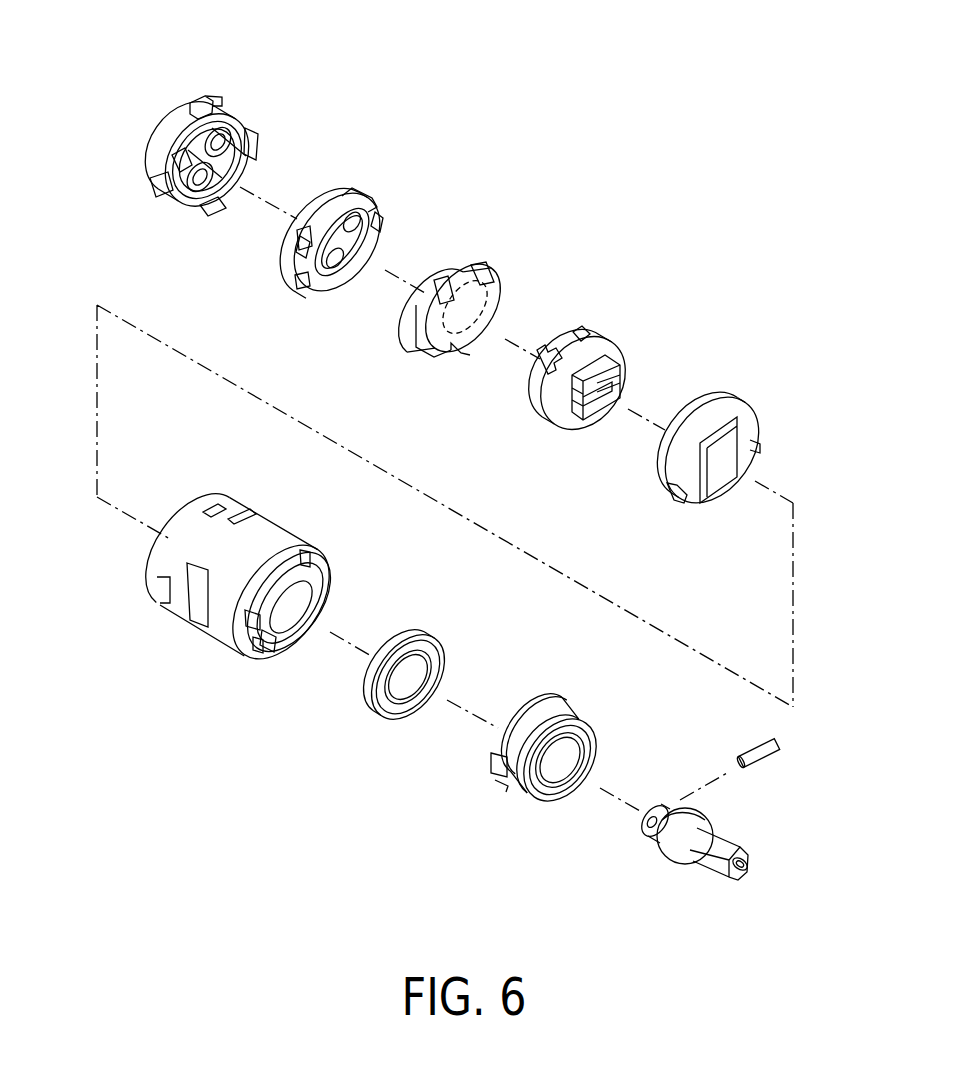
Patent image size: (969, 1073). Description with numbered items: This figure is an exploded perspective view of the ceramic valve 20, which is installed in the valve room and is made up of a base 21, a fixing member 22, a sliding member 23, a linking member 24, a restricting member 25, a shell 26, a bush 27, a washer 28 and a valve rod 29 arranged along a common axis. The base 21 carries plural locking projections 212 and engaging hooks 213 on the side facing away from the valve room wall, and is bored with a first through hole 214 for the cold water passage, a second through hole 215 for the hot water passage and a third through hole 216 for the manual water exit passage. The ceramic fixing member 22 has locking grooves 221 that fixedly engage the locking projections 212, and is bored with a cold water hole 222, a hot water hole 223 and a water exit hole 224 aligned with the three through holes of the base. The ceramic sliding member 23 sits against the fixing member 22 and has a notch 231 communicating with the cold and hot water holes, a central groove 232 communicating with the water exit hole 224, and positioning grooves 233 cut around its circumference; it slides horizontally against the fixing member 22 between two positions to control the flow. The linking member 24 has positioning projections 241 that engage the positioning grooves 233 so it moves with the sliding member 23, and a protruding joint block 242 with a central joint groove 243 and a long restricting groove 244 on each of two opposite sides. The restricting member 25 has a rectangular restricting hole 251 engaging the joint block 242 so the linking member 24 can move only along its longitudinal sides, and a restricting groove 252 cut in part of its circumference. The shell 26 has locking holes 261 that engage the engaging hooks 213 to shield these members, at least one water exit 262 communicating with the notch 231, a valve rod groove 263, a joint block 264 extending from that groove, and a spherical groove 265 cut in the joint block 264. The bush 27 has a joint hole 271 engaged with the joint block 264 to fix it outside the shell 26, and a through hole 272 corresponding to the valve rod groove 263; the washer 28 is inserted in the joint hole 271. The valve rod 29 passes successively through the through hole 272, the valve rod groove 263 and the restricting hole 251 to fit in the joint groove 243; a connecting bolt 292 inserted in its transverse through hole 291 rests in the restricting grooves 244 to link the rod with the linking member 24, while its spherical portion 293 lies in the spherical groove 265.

The ceramic valve 20 is at (719, 231).
The base 21 is at (227, 100).
The locking projections 212 is at (177, 160).
The engaging hooks 213 is at (222, 100).
The first through hole 214 is at (173, 172).
The second through hole 215 is at (217, 132).
The third through hole 216 is at (207, 193).
The fixing member 22 is at (363, 188).
The locking grooves 221 is at (343, 186).
The cold water hole 222 is at (302, 243).
The hot water hole 223 is at (380, 224).
The water exit hole 224 is at (365, 252).
The sliding member 23 is at (498, 287).
The notch 231 is at (427, 303).
The groove 232 is at (493, 303).
The positioning grooves 233 is at (467, 347).
The linking member 24 is at (615, 342).
The positioning projections 241 is at (582, 332).
The joint block 242 is at (602, 410).
The joint groove 243 is at (605, 393).
The restricting grooves 244 is at (617, 380).
The restricting member 25 is at (760, 420).
The restricting hole 251 is at (730, 457).
The restricting groove 252 is at (677, 503).
The shell 26 is at (223, 633).
The locking holes 261 is at (216, 505).
The water exit 262 is at (193, 593).
The valve rod groove 263 is at (317, 592).
The joint block 264 is at (271, 640).
The spherical groove 265 is at (313, 612).
The bush 27 is at (548, 707).
The joint hole 271 is at (560, 788).
The through hole 272 is at (583, 753).
The washer 28 is at (393, 710).
The valve rod 29 is at (747, 848).
The through hole 291 is at (662, 836).
The connecting bolt 292 is at (763, 757).
The spherical portion 293 is at (680, 858).